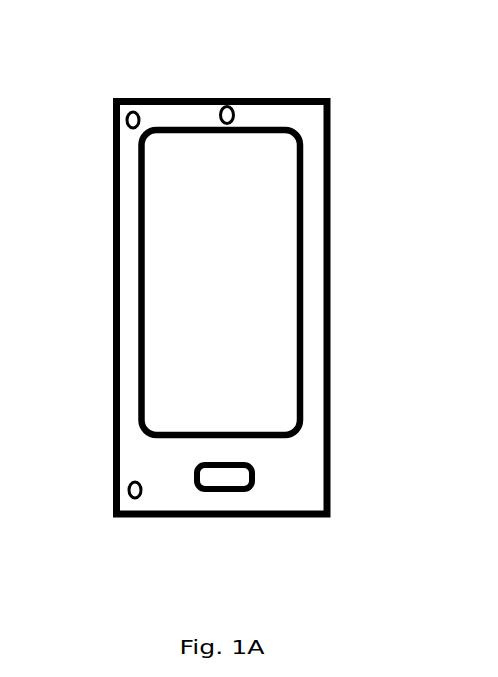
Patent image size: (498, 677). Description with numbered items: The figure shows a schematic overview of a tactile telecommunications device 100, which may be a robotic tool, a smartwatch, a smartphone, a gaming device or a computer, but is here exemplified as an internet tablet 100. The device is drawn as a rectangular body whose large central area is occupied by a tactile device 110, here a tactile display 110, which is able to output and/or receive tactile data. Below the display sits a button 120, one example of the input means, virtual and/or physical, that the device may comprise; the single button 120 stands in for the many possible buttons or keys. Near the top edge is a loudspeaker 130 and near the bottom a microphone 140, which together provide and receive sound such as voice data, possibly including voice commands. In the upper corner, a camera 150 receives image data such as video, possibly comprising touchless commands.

The tactile telecommunications device 100 is at (330, 140).
The tactile device 110 is at (300, 368).
The button 120 is at (225, 493).
The loudspeaker 130 is at (227, 106).
The microphone 140 is at (128, 493).
The camera 150 is at (127, 121).